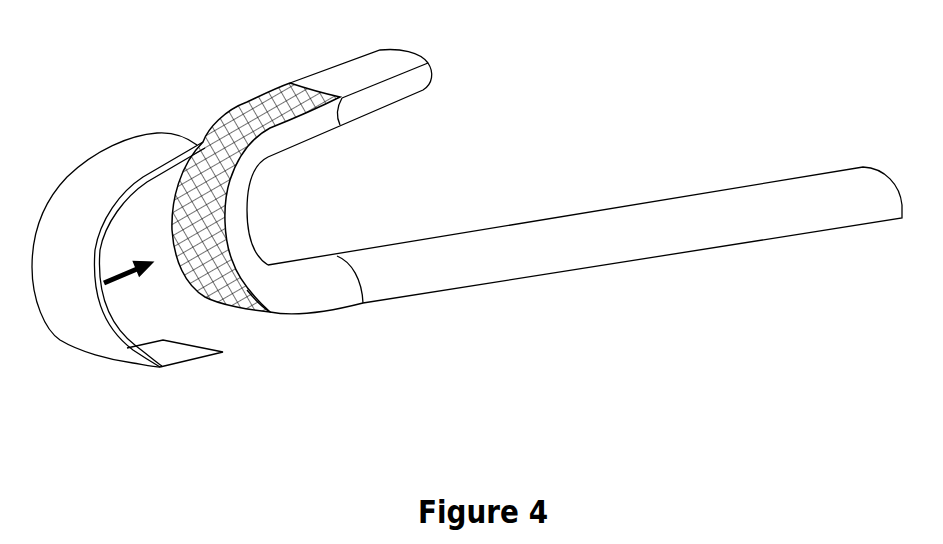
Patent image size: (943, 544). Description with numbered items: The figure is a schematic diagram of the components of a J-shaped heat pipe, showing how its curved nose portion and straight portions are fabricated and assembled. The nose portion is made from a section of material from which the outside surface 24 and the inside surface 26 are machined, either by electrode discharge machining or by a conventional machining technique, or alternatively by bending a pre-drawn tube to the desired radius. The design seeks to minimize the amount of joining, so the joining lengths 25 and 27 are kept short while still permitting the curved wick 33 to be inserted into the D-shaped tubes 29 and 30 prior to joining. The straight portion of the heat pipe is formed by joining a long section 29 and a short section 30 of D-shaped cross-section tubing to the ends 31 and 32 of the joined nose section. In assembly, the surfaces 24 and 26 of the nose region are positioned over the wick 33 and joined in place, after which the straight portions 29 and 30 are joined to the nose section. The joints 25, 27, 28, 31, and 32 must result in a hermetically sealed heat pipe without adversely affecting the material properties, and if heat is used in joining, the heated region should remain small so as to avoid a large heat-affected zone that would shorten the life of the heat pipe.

The outside surface 24 is at (137, 157).
The joining length 25 is at (184, 136).
The inside surface 26 is at (293, 307).
The joining length 27 is at (246, 304).
The joint 28 is at (237, 105).
The long section of D-shaped tubing 29 is at (500, 242).
The short section of D-shaped tubing 30 is at (395, 63).
The end of nose section 31 is at (340, 254).
The end of nose section 32 is at (343, 122).
The curved wick 33 is at (239, 166).